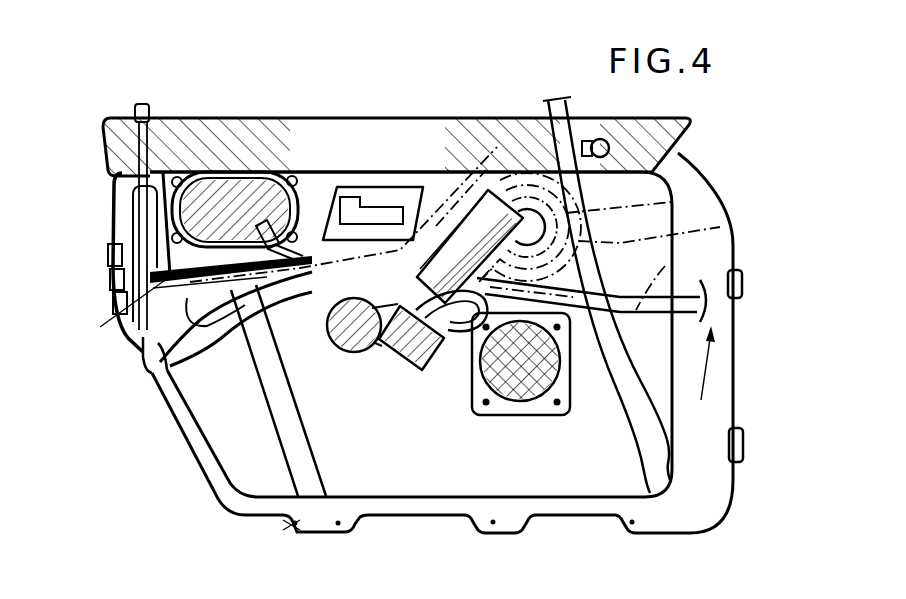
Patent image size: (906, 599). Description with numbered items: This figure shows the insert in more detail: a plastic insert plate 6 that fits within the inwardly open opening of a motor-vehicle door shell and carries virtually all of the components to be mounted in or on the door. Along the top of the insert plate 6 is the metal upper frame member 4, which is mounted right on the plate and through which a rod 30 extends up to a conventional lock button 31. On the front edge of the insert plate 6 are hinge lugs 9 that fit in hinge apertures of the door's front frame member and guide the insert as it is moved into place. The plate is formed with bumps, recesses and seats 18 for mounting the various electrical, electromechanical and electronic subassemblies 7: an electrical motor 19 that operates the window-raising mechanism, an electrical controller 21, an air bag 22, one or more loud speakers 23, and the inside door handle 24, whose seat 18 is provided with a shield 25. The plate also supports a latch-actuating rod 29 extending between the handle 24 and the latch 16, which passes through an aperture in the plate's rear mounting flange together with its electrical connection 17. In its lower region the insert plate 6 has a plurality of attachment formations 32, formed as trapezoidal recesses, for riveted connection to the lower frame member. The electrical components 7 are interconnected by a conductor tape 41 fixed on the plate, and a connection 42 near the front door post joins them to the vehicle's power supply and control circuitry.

The upper frame member 4 is at (418, 130).
The insert plate 6 is at (153, 463).
The subassemblies 7 is at (333, 185).
The hinge lugs 9 is at (742, 287).
The latch 16 is at (110, 270).
The electrical connection 17 is at (140, 347).
The seats 18 is at (275, 165).
The electrical motor 19 is at (420, 367).
The electrical controller 21 is at (493, 180).
The air bag 22 is at (217, 197).
The loud speakers 23 is at (608, 145).
The inside door handle 24 is at (387, 212).
The shield 25 is at (365, 212).
The latch-actuating rod 29 is at (133, 370).
The rod 30 is at (127, 147).
The lock button 31 is at (140, 103).
The attachment formations 32 is at (335, 527).
The conductor tape 41 is at (665, 266).
The connection 42 is at (705, 386).